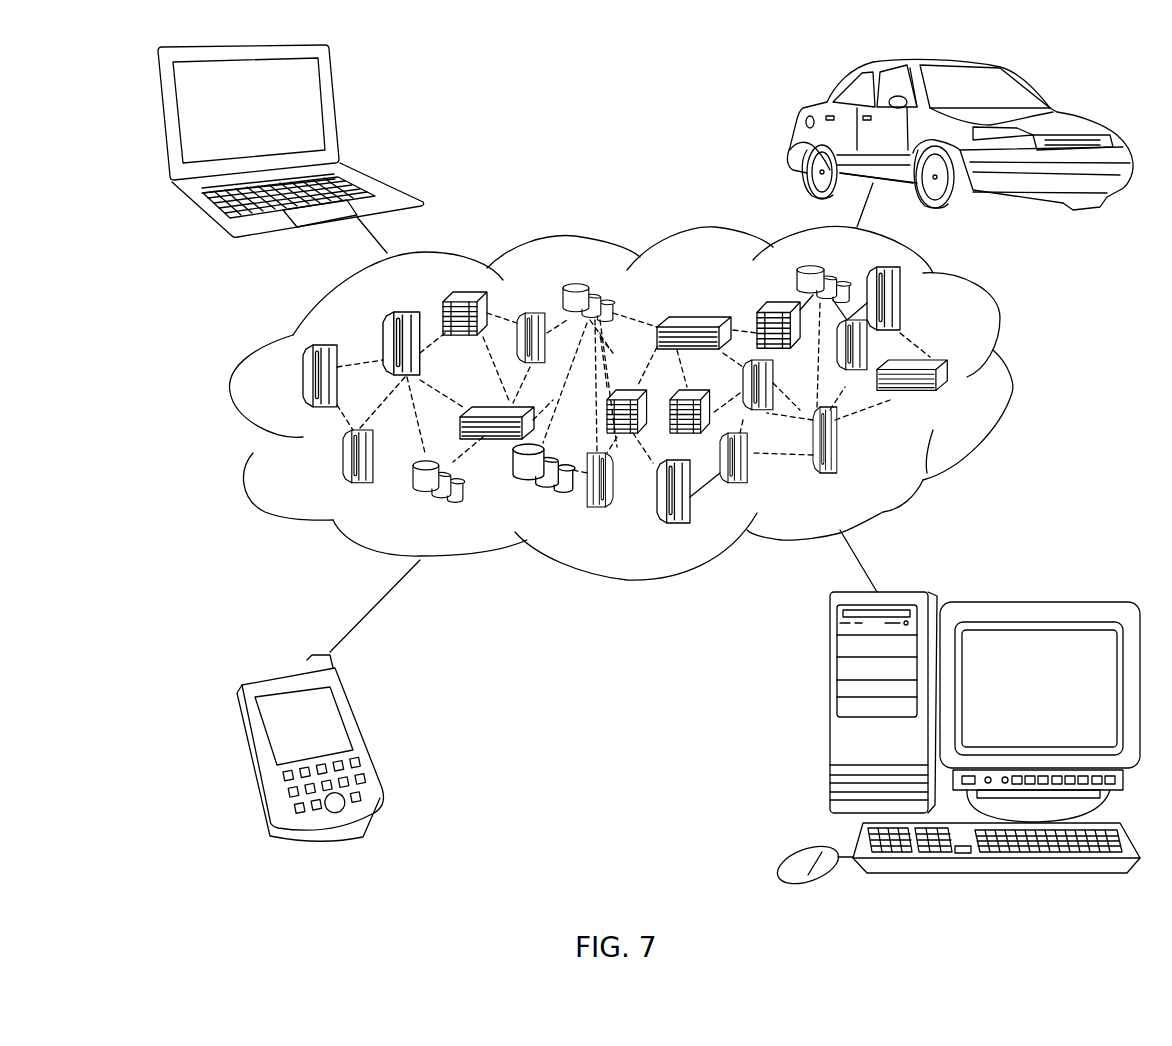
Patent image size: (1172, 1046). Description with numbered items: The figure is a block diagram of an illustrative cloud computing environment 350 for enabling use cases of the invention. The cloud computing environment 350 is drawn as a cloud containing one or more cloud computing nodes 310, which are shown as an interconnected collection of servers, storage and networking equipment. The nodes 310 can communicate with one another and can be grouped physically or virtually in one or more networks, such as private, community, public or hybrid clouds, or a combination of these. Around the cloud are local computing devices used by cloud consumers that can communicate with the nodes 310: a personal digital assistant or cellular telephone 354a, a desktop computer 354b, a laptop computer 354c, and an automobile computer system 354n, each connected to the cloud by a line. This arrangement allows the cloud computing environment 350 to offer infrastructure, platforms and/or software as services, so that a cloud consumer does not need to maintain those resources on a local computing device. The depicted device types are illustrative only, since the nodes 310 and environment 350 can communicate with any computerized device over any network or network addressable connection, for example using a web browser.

The cloud computing nodes 310 is at (967, 398).
The cloud computing environment 350 is at (997, 310).
The personal digital assistant (PDA) or cellular telephone 354a is at (358, 725).
The desktop computer 354b is at (827, 713).
The laptop computer 354c is at (335, 102).
The automobile computer system 354n is at (807, 112).